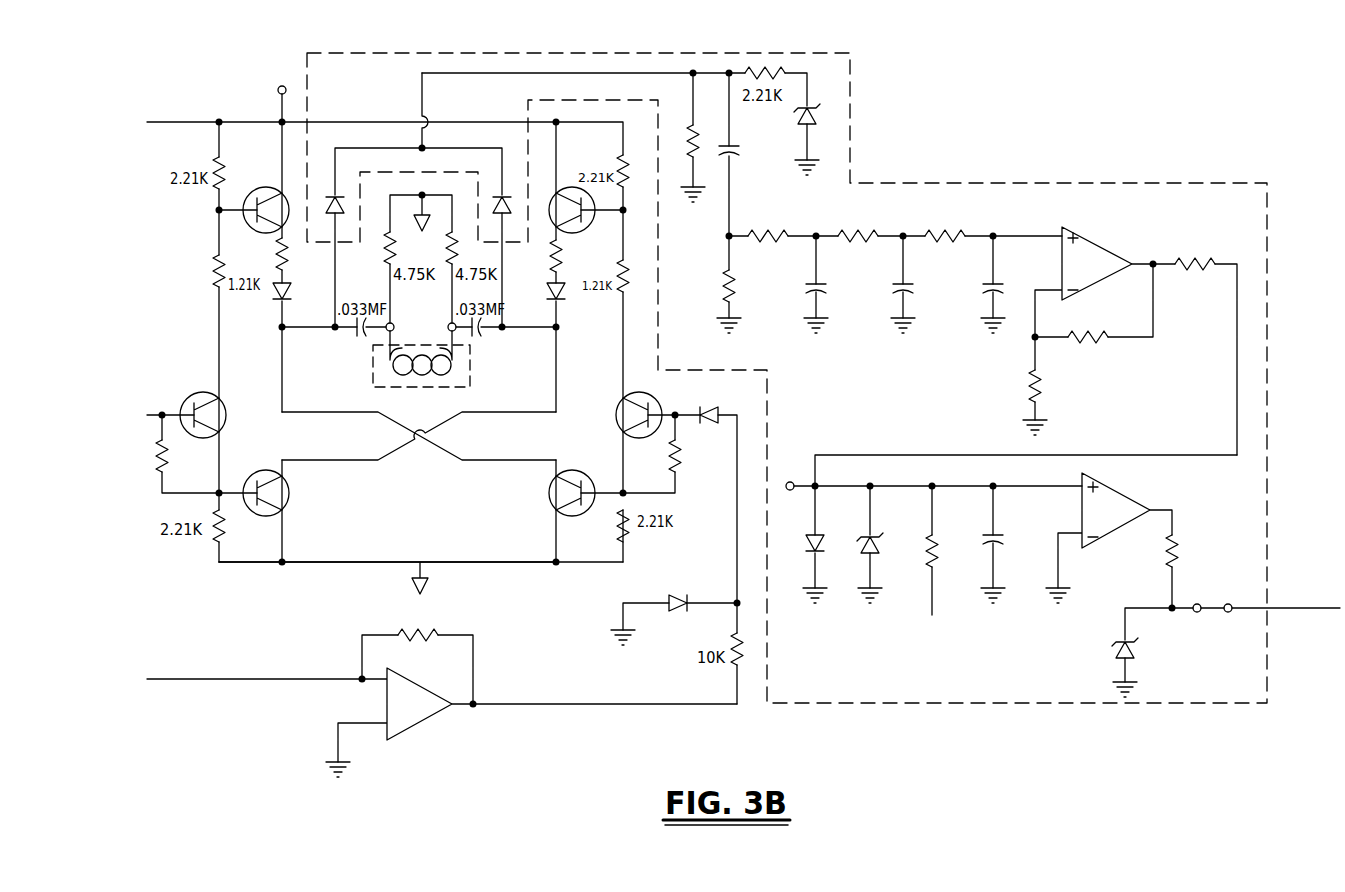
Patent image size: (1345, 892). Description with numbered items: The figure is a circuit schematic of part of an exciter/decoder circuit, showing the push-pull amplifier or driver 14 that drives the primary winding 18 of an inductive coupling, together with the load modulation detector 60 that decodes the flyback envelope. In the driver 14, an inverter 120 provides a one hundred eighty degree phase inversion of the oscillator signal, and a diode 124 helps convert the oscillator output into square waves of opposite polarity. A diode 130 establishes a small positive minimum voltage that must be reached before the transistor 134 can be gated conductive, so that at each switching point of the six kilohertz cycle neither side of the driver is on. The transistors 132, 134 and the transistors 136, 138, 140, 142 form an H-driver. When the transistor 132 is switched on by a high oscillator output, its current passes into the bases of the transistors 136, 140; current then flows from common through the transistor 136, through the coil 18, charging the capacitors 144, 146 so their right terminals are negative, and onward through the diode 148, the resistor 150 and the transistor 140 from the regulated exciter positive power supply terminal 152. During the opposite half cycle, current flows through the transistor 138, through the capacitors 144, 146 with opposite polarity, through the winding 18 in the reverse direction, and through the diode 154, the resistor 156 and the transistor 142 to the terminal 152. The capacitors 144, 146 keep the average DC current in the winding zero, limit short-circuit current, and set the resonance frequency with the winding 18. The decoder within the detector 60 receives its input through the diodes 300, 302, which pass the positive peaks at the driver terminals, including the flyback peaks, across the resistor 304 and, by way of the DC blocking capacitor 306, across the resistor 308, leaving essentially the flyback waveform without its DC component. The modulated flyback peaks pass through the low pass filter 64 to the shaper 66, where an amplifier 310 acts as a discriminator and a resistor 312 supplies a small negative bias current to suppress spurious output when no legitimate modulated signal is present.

The push-pull amplifier 14 is at (519, 582).
The primary winding 18 is at (470, 382).
The load modulation detector 60 is at (852, 148).
The low pass filter 64 is at (941, 211).
The shaper 66 is at (922, 466).
The inverter 120 is at (420, 686).
The diode 124 is at (670, 590).
The diode 130 is at (718, 410).
The transistor 132 is at (203, 392).
The transistor 134 is at (615, 418).
The transistor 136 is at (288, 500).
The transistor 138 is at (545, 494).
The transistor 140 is at (263, 188).
The transistor 142 is at (569, 190).
The capacitor 144 is at (357, 337).
The capacitor 146 is at (487, 337).
The diode 148 is at (273, 293).
The resistor 150 is at (277, 250).
The regulated exciter positive power supply terminal 152 is at (278, 90).
The diode 154 is at (565, 297).
The resistor 156 is at (563, 258).
The diode 300 is at (346, 200).
The diode 302 is at (517, 203).
The resistor 304 is at (690, 170).
The capacitor 306 is at (740, 158).
The resistor 308 is at (725, 292).
The amplifier 310 is at (1125, 495).
The resistor 312 is at (918, 580).